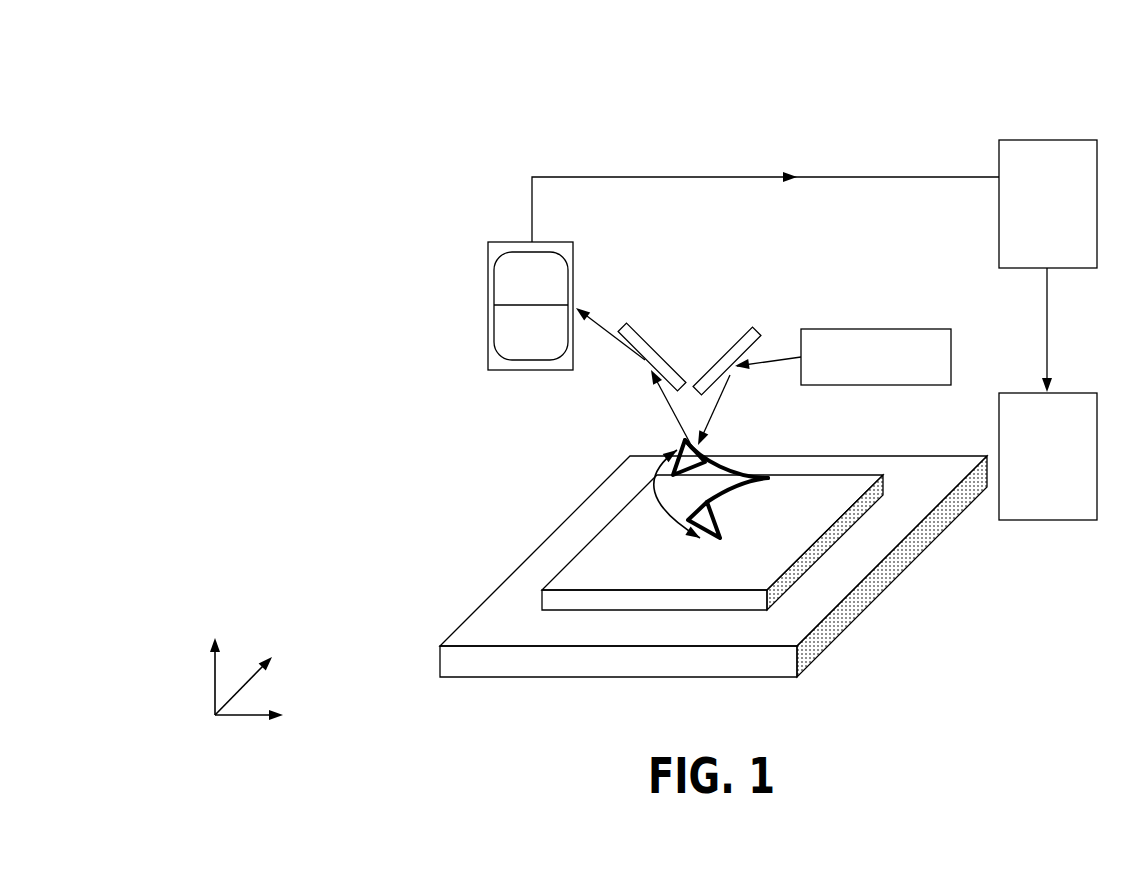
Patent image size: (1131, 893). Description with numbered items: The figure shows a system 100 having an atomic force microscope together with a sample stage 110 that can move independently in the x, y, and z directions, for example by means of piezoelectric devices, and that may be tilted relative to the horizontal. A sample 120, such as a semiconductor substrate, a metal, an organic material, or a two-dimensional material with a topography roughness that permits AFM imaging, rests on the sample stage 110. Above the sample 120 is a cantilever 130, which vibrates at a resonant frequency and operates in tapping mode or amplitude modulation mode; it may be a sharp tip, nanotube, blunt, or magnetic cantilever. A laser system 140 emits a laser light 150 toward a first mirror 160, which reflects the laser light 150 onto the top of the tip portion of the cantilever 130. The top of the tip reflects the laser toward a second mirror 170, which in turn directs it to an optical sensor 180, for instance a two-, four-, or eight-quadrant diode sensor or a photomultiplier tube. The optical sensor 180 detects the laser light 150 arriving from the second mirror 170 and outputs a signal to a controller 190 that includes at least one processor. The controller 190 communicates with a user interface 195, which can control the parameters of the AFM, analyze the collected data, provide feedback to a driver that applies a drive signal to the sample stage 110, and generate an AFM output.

The system 100 is at (519, 92).
The sample stage 110 is at (438, 660).
The sample 120 is at (542, 600).
The cantilever 130 is at (735, 460).
The laser system 140 is at (860, 330).
The laser light 150 is at (775, 358).
The first mirror 160 is at (710, 365).
The second mirror 170 is at (683, 290).
The optical sensor 180 is at (488, 273).
The controller 190 is at (1025, 140).
The user interface 195 is at (1060, 522).